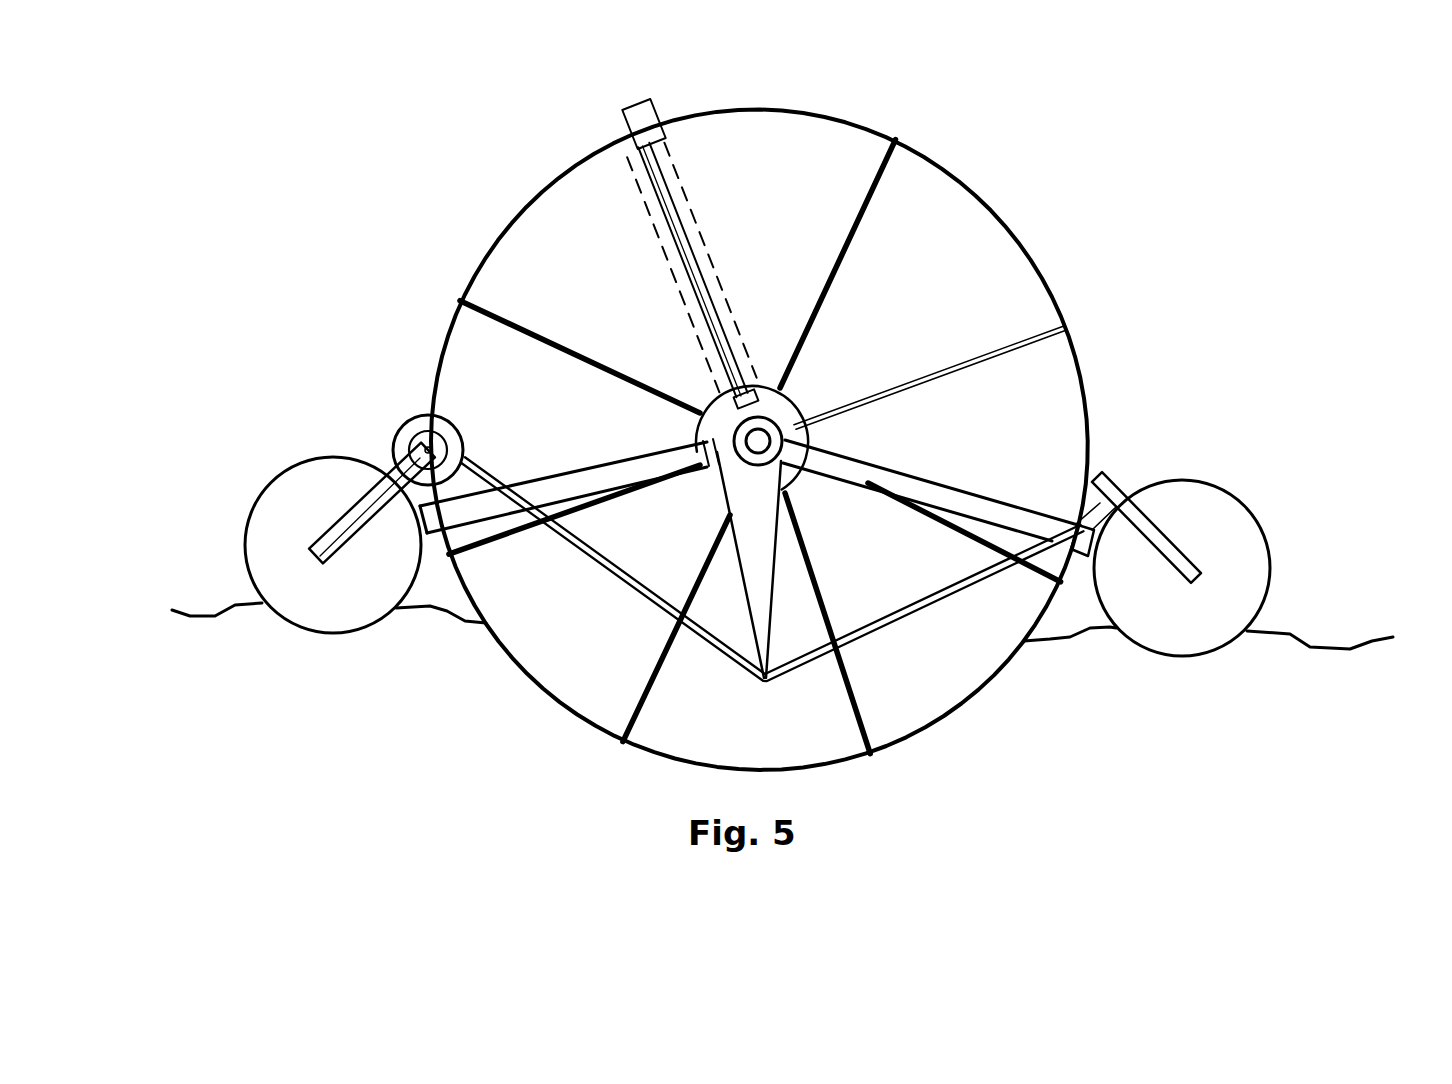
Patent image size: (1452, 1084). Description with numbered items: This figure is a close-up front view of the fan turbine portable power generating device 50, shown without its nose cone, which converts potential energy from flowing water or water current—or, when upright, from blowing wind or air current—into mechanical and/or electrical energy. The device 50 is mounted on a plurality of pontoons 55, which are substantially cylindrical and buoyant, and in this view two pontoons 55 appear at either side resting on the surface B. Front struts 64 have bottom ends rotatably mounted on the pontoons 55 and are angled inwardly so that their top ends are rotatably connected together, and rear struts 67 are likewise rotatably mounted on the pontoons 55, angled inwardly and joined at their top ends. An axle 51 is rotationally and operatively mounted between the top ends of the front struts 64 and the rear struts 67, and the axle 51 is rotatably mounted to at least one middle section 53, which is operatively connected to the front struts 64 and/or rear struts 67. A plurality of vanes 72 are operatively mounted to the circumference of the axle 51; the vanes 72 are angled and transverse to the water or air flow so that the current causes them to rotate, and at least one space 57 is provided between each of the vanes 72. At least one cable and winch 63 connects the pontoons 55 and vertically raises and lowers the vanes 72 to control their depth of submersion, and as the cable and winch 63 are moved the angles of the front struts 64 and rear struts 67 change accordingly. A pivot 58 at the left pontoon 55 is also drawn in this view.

The fan turbine portable power generating device 50 is at (868, 100).
The axle 51 is at (786, 426).
The middle section 53 is at (773, 582).
The pontoons 55 is at (292, 462).
The space 57 is at (620, 100).
The pivot 58 is at (405, 423).
The cable and winch 63 is at (588, 556).
The front struts 64 is at (968, 492).
The rear struts 67 is at (605, 465).
The vanes 72 is at (815, 766).
The ground surface B is at (782, 677).